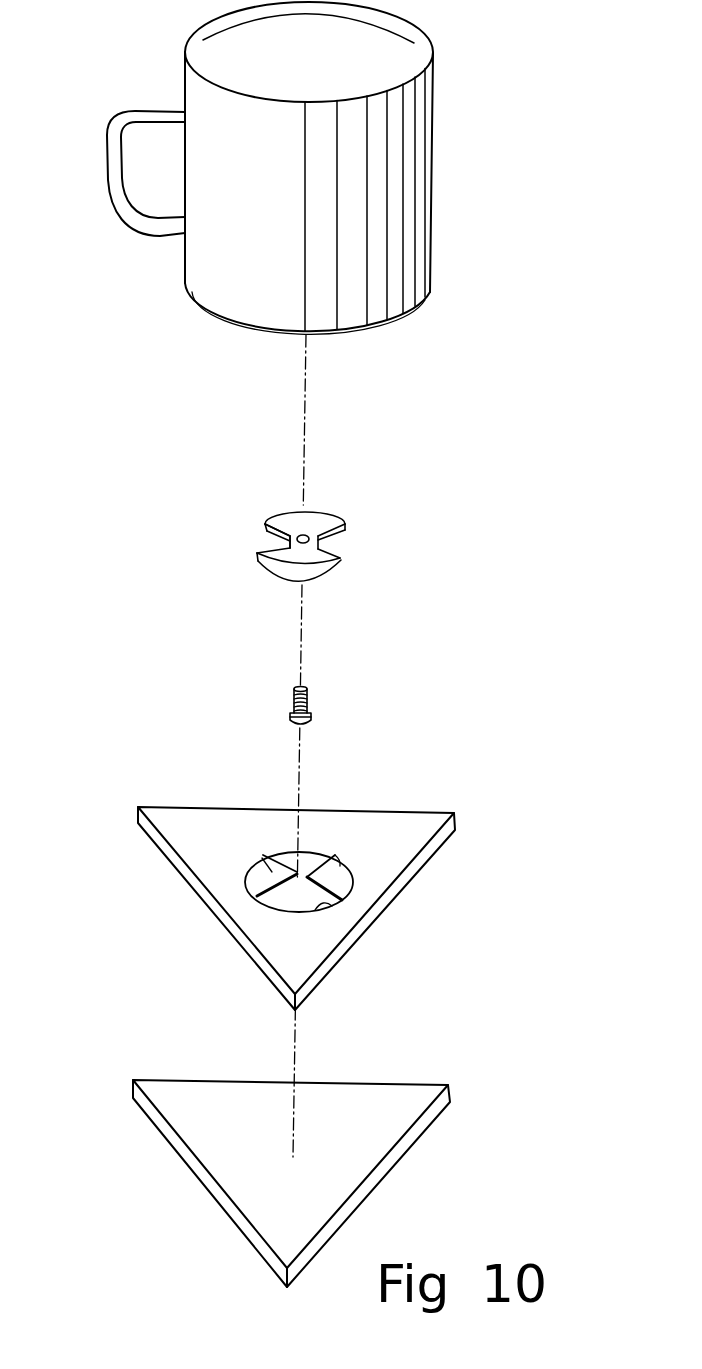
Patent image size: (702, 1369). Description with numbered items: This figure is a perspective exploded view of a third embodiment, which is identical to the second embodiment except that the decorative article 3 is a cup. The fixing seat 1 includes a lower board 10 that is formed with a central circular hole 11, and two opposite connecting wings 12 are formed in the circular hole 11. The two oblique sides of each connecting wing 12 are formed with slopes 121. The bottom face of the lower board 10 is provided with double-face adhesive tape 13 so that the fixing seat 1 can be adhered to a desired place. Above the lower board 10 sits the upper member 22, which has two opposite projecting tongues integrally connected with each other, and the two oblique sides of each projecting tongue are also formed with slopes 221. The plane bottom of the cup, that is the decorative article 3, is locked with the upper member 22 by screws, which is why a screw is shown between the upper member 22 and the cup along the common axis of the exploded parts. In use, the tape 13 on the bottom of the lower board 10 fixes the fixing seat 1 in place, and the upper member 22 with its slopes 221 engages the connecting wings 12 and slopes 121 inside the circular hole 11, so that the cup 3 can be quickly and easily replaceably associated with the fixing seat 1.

The fixing seat 1 is at (532, 702).
The decorative article 3 is at (440, 190).
The lower board 10 is at (216, 876).
The central circular hole 11 is at (337, 903).
The connecting wings 12 is at (258, 857).
The slopes 121 is at (273, 893).
The double-face adhesive tape 13 is at (212, 1163).
The upper member with projecting tongues 22 is at (299, 546).
The slopes 221 is at (265, 522).